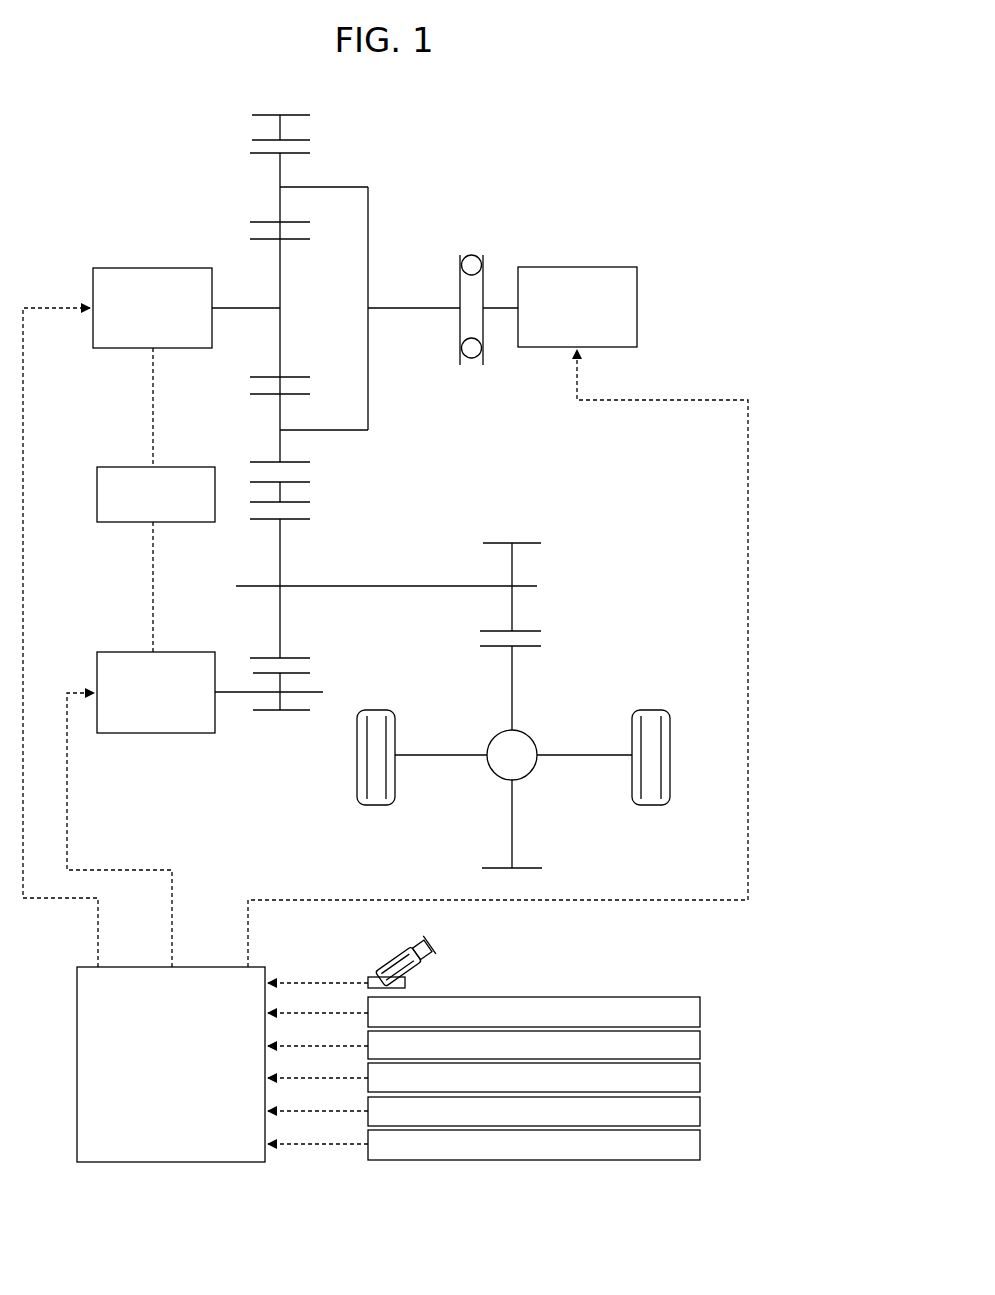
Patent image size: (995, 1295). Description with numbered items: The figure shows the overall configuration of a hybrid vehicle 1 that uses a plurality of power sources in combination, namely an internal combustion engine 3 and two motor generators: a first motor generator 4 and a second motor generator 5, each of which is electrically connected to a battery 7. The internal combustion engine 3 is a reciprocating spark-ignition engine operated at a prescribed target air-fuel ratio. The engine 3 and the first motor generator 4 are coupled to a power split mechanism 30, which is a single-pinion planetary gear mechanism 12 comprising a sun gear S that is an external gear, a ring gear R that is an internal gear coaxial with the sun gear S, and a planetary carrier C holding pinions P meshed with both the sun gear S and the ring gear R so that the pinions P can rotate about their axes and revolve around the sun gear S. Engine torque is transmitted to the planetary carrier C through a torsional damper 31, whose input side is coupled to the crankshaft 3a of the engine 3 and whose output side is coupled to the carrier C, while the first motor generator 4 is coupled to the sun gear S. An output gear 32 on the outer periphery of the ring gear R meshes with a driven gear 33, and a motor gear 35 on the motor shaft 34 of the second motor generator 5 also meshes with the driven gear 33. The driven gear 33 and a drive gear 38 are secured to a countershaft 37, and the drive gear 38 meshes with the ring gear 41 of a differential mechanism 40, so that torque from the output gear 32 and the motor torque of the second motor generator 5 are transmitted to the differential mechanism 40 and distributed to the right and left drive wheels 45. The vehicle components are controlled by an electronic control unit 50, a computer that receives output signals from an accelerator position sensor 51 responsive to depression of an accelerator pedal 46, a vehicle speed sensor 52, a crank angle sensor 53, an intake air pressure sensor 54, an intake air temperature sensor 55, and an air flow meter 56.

The vehicle 1 is at (622, 112).
The internal combustion engine 3 is at (580, 267).
The crankshaft 3a is at (508, 316).
The first motor generator 4 is at (143, 268).
The second motor generator 5 is at (133, 652).
The battery 7 is at (113, 458).
The planetary gear mechanism 12 is at (290, 116).
The ring gear R is at (270, 135).
The pinions P is at (278, 168).
The sun gear S is at (284, 278).
The planetary carrier C is at (370, 218).
The power split mechanism 30 is at (372, 160).
The torsional damper 31 is at (488, 255).
The output gear 32 is at (290, 508).
The driven gear 33 is at (284, 543).
The motor shaft 34 is at (239, 690).
The motor gear 35 is at (286, 686).
The countershaft 37 is at (400, 585).
The drive gear 38 is at (516, 557).
The differential mechanism 40 is at (527, 733).
The ring gear of differential mechanism 41 is at (536, 641).
The drive wheels 45 is at (355, 762).
The accelerator pedal 46 is at (380, 958).
The electronic control unit 50 is at (80, 966).
The accelerator position sensor 51 is at (370, 976).
The vehicle speed sensor 52 is at (701, 1011).
The crank angle sensor 53 is at (701, 1047).
The intake air pressure sensor 54 is at (701, 1078).
The intake air temperature sensor 55 is at (701, 1112).
The air flow meter 56 is at (701, 1146).